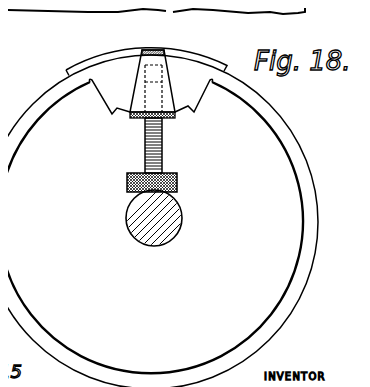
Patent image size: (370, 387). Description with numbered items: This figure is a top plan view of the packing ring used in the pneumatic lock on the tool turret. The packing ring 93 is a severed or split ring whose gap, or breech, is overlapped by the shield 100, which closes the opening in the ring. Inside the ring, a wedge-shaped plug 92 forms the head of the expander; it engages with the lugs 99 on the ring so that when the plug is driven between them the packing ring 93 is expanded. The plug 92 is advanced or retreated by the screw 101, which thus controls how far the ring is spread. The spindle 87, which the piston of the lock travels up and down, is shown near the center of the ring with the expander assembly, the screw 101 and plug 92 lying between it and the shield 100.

The spindle 87 is at (133, 218).
The wedge-shaped plug 92 is at (166, 68).
The packing ring 93 is at (283, 120).
The lugs 99 is at (115, 97).
The shield 100 is at (138, 40).
The screw 101 is at (143, 162).